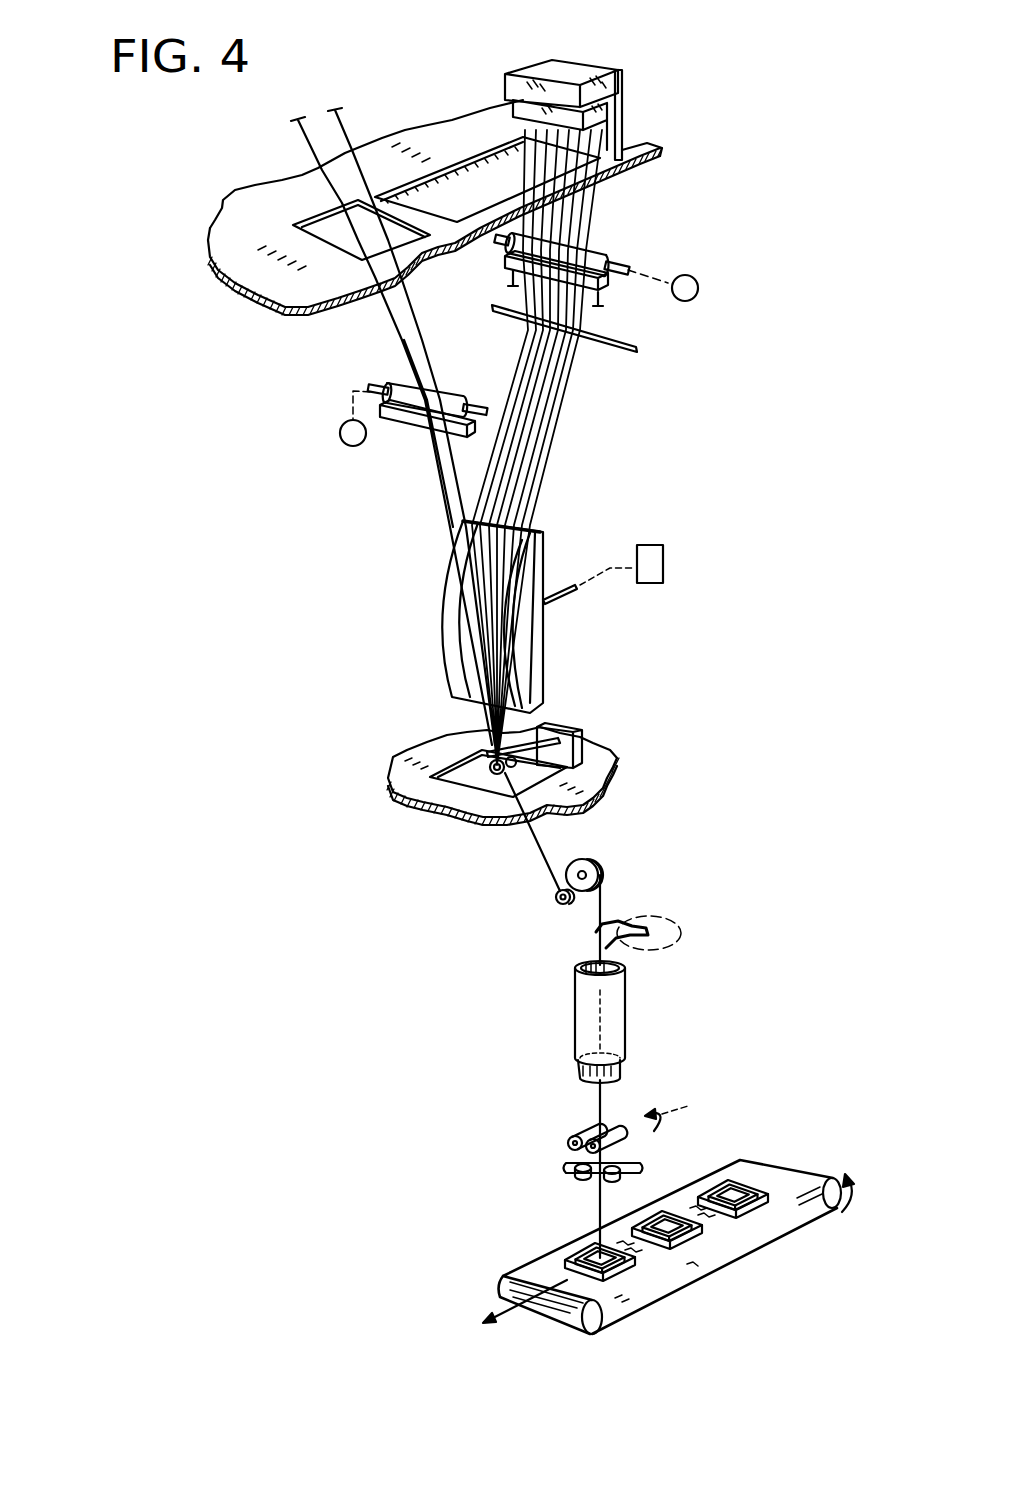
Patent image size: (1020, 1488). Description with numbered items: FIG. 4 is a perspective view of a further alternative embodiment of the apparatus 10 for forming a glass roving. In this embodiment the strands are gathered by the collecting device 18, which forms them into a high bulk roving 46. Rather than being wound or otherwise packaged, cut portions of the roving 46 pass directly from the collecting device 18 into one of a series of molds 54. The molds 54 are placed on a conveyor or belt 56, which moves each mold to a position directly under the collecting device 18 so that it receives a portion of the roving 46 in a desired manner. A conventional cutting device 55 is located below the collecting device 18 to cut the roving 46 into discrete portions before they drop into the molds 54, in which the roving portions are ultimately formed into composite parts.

The apparatus 10 is at (707, 70).
The collecting device 18 is at (656, 1021).
The roving 46 is at (600, 1212).
The molds 54 is at (625, 1263).
The cutting device 55 is at (640, 1168).
The conveyor or belt 56 is at (503, 1295).